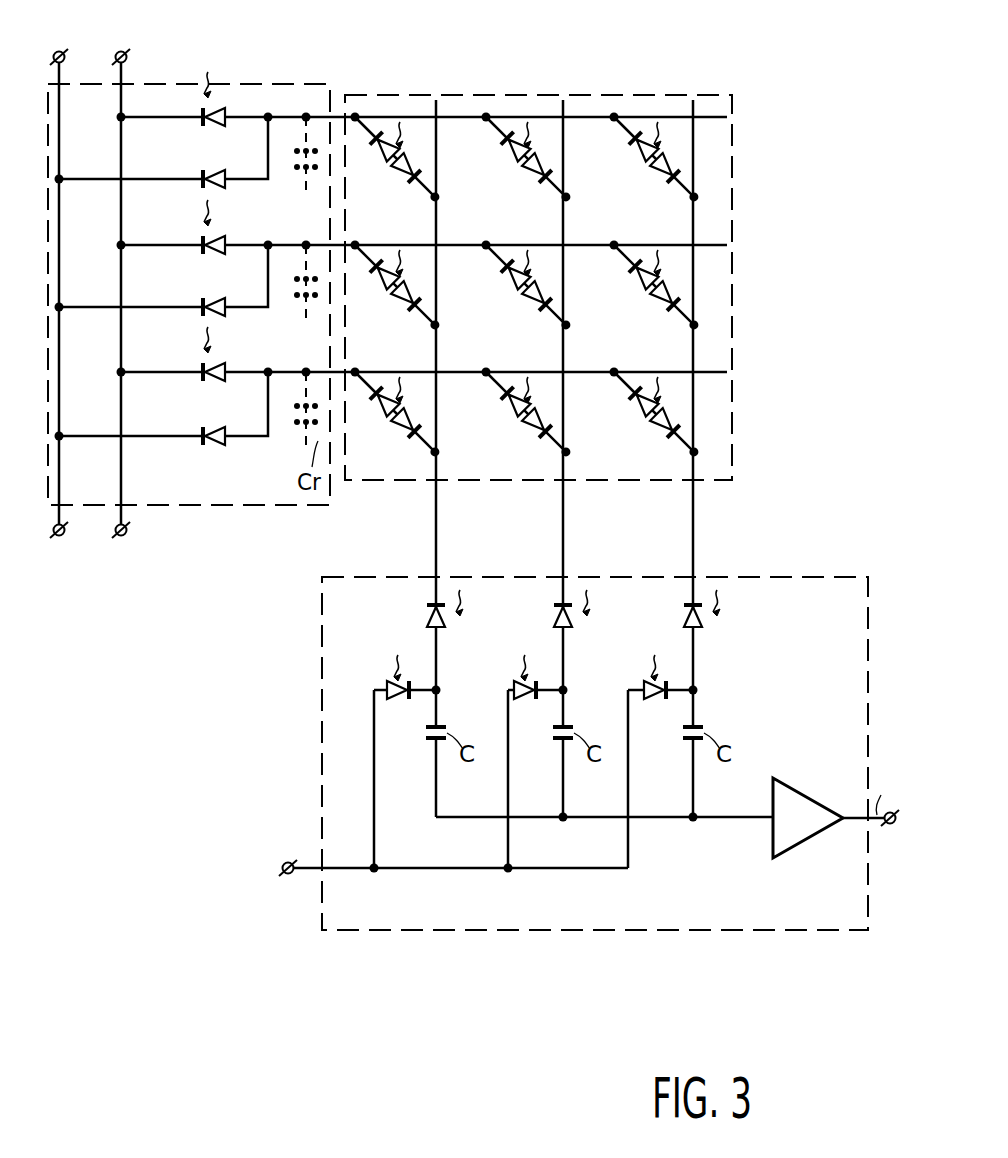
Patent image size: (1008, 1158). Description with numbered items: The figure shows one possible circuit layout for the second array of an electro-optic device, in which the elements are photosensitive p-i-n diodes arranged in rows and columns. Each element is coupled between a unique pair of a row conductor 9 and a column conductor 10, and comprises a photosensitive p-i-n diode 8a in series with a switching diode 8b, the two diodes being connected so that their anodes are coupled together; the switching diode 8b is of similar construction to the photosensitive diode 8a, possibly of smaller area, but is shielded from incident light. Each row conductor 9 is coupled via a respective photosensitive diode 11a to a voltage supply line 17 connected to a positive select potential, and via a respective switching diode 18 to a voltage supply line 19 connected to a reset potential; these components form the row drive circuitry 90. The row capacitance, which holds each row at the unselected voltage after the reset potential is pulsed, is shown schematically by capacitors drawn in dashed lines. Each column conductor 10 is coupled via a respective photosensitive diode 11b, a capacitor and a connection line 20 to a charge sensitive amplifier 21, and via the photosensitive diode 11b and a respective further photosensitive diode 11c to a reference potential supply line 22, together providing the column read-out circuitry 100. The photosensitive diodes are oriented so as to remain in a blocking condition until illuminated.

The photosensitive p-i-n diode 8a is at (560, 256).
The switching diode 8b is at (535, 166).
The row conductor 9 is at (690, 254).
The column conductor 10 is at (697, 307).
The photosensitive diode 11a is at (218, 105).
The photosensitive diode 11b is at (447, 618).
The further photosensitive diode 11c is at (395, 697).
The voltage supply line 17 is at (125, 521).
The switching diode 18 is at (216, 176).
The voltage supply line 19 is at (63, 521).
The connection line 20 is at (740, 819).
The charge sensitive amplifier 21 is at (808, 826).
The reference potential supply line 22 is at (462, 872).
The row drive circuitry 90 is at (200, 508).
The column read-out circuitry 100 is at (610, 932).